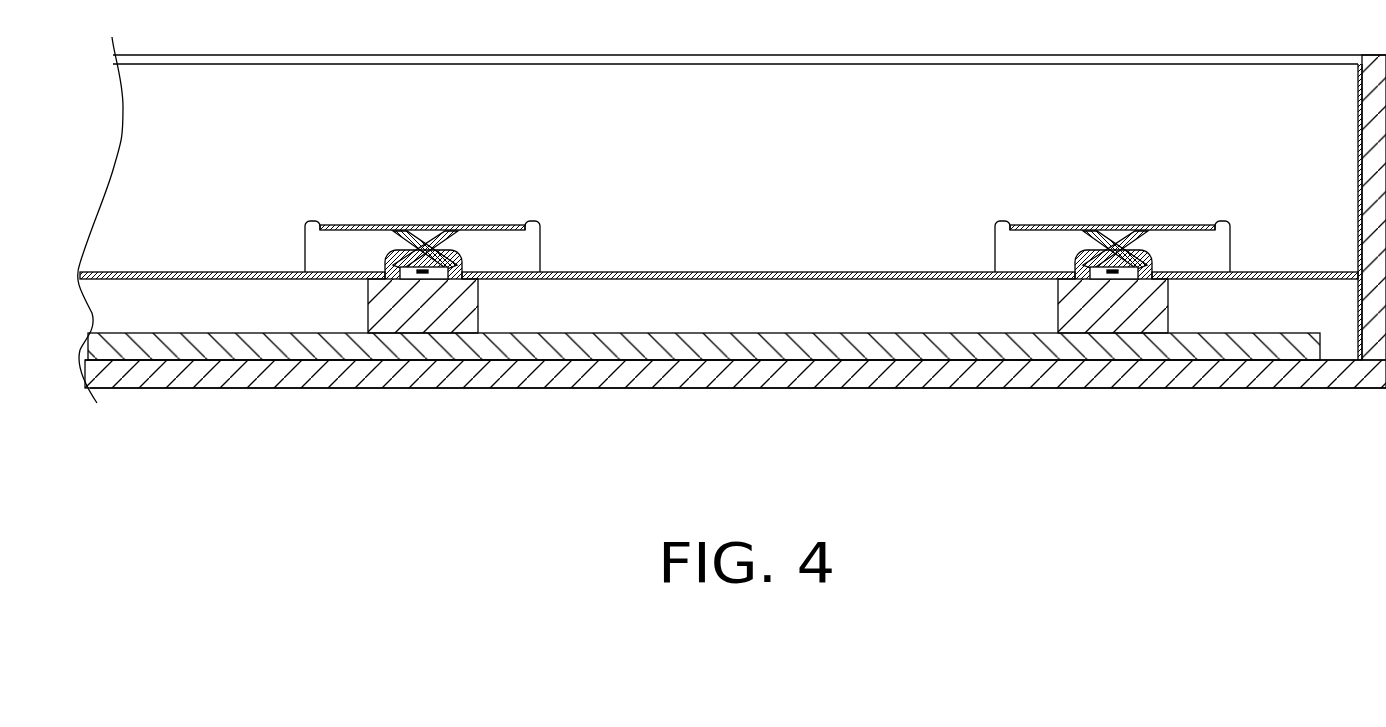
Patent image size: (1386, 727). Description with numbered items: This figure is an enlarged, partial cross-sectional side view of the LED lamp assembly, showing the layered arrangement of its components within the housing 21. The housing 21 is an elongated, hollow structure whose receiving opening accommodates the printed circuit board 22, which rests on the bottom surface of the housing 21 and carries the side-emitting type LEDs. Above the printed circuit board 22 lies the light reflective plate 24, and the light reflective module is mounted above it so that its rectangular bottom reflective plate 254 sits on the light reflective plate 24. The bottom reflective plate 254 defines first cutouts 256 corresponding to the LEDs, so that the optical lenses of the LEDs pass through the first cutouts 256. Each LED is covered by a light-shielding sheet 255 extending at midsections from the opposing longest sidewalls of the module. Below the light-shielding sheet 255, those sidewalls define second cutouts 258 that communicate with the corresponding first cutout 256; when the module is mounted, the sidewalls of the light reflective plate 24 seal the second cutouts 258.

The housing 21 is at (1325, 377).
The printed circuit board 22 is at (1230, 348).
The light reflective plate 24 is at (997, 272).
The bottom reflective plate 254 is at (739, 272).
The light-shielding sheet 255 is at (345, 225).
The first cutout 256 is at (1222, 272).
The second cutout 258 is at (498, 237).